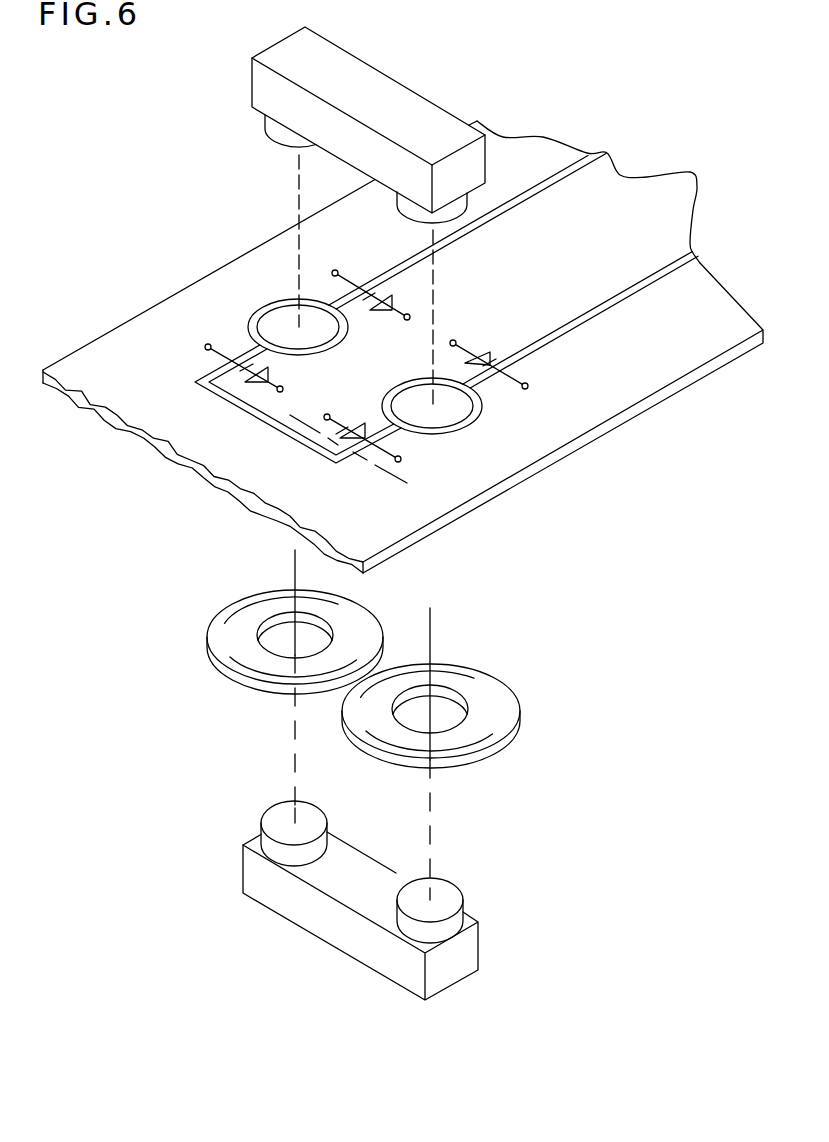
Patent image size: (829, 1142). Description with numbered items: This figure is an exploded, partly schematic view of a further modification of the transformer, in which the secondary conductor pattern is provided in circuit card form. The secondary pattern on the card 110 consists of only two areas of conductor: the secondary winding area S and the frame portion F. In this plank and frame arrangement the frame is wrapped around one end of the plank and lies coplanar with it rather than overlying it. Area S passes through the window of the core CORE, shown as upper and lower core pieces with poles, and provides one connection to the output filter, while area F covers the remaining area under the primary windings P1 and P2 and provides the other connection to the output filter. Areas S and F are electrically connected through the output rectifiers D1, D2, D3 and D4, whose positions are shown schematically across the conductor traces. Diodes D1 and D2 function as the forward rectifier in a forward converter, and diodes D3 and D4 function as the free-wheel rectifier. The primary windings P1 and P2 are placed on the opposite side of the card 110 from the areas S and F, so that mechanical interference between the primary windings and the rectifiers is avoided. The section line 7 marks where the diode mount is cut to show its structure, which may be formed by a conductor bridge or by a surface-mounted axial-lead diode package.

The card 110 is at (553, 455).
The core CORE is at (385, 102).
The primary winding P1 is at (240, 640).
The primary winding P2 is at (480, 723).
The output rectifier diode D1 is at (383, 442).
The output rectifier diode D2 is at (234, 353).
The output rectifier diode D3 is at (504, 377).
The output rectifier diode D4 is at (364, 279).
The secondary winding area S is at (526, 269).
The frame portion F is at (127, 381).
The section line 7 is at (290, 434).